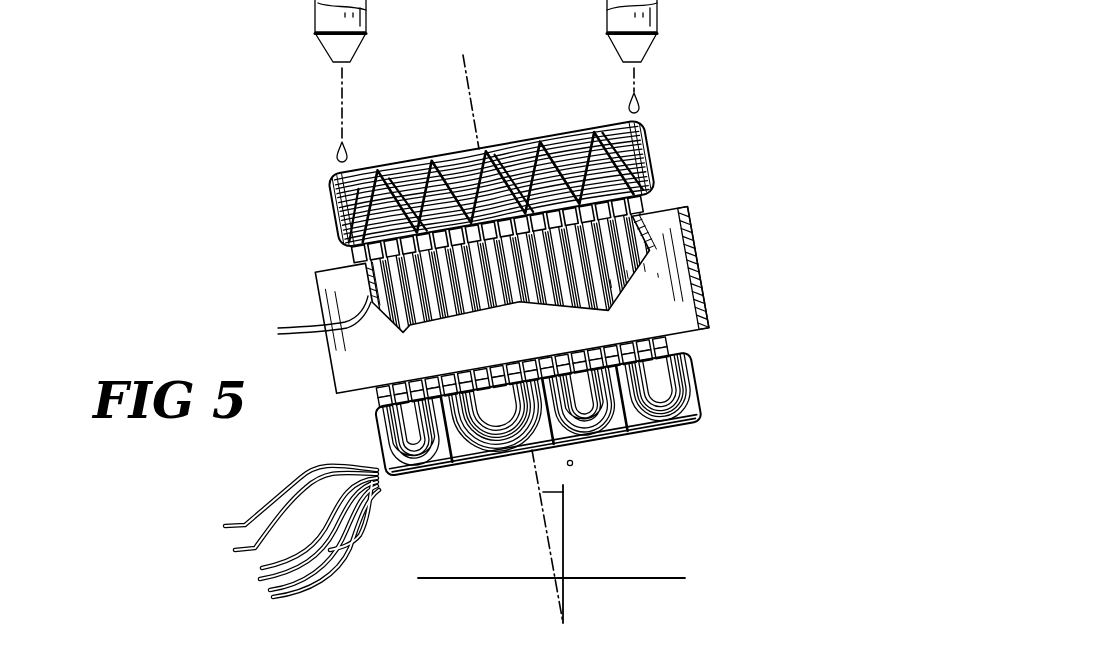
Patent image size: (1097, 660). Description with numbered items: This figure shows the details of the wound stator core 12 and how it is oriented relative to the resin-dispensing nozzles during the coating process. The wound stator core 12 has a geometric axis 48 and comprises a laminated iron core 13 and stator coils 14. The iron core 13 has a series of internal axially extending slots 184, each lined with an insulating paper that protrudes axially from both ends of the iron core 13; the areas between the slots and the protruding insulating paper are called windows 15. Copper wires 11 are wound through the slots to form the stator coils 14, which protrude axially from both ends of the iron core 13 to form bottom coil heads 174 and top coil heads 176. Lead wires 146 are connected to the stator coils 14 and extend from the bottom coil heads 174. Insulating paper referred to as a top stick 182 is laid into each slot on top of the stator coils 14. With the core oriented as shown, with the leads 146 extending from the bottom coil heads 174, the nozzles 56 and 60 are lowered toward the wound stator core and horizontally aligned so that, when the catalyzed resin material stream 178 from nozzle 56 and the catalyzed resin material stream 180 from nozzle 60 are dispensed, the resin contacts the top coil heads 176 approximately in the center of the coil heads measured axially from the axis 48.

The copper wires 11 is at (643, 437).
The wound stator core 12 is at (713, 502).
The laminated iron core 13 is at (707, 305).
The stator coils 14 is at (443, 467).
The windows 15 is at (442, 155).
The geometric axis 48 is at (544, 518).
The nozzle 56 is at (322, 14).
The nozzle 60 is at (658, 12).
The lead wires 146 is at (270, 507).
The bottom coil heads 174 is at (683, 391).
The top coil heads 176 is at (648, 152).
The catalyzed resin material stream 178 is at (340, 95).
The catalyzed resin material stream 180 is at (636, 72).
The top stick 182 is at (610, 250).
The slots 184 is at (303, 319).